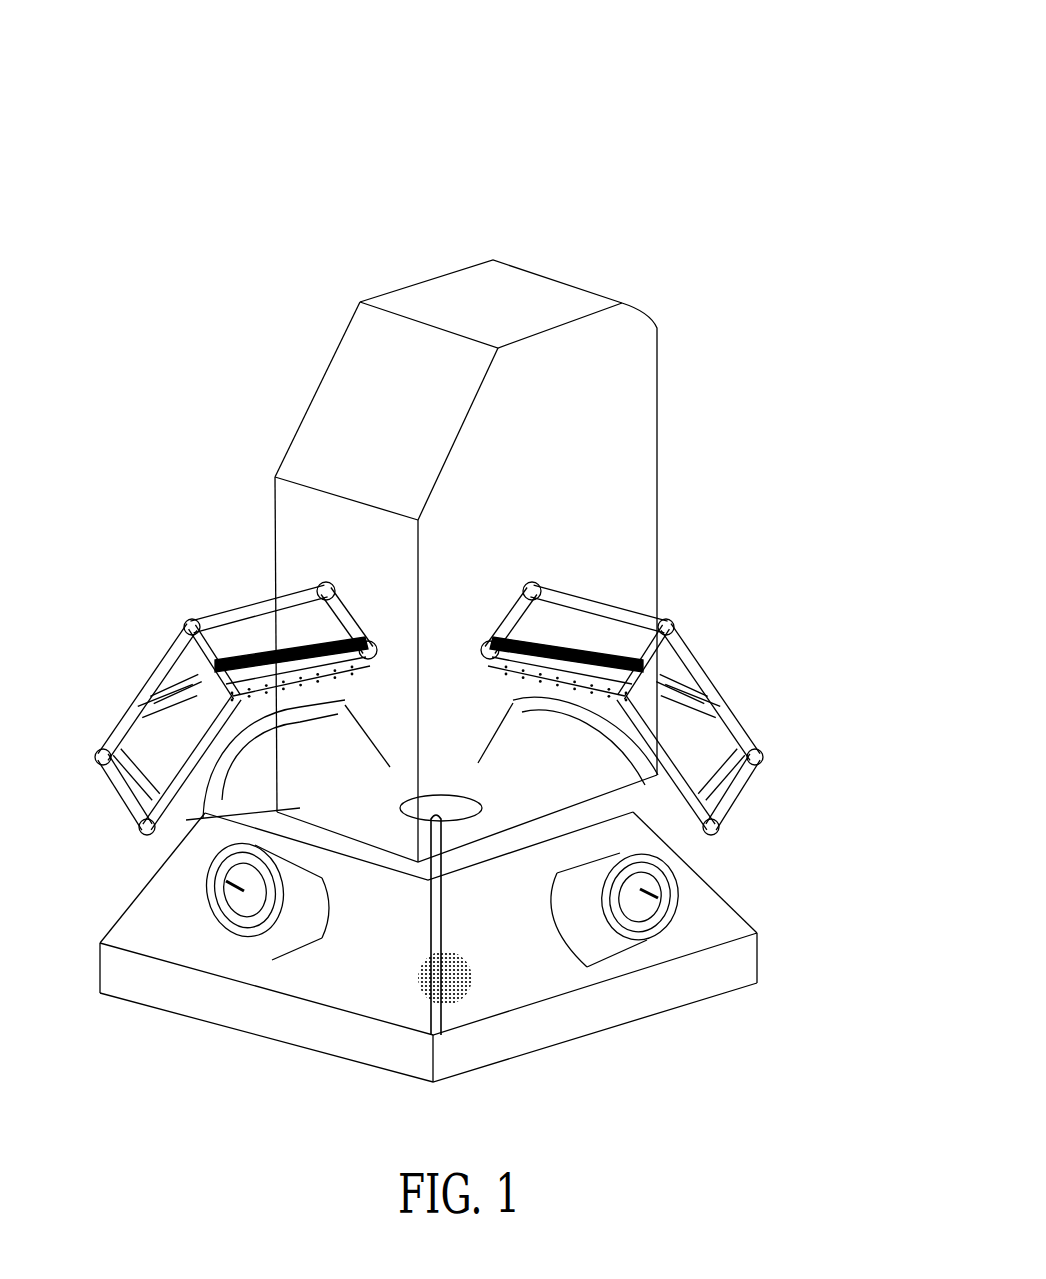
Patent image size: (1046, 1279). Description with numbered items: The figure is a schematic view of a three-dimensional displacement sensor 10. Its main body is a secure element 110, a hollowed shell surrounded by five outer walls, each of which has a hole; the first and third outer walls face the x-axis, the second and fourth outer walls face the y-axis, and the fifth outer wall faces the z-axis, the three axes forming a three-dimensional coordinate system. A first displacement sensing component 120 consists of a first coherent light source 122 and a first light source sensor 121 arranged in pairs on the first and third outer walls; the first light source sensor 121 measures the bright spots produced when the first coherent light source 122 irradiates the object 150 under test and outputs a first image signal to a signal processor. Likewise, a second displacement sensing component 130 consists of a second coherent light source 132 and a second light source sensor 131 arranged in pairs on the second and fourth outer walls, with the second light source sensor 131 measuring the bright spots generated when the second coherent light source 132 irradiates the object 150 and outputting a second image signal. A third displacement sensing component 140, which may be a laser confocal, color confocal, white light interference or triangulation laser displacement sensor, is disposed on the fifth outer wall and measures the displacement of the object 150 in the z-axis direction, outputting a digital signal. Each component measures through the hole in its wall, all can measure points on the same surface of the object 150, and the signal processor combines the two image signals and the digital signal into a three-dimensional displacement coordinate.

The three-dimensional displacement sensor 10 is at (790, 68).
The secure element 110 is at (749, 1002).
The first displacement sensing component 120 is at (110, 133).
The first light source sensor 121 is at (727, 673).
The first coherent light source 122 is at (193, 903).
The second displacement sensing component 130 is at (110, 222).
The second light source sensor 131 is at (155, 676).
The second coherent light source 132 is at (676, 898).
The third displacement sensing component 140 is at (622, 443).
The object under test 150 is at (455, 1001).